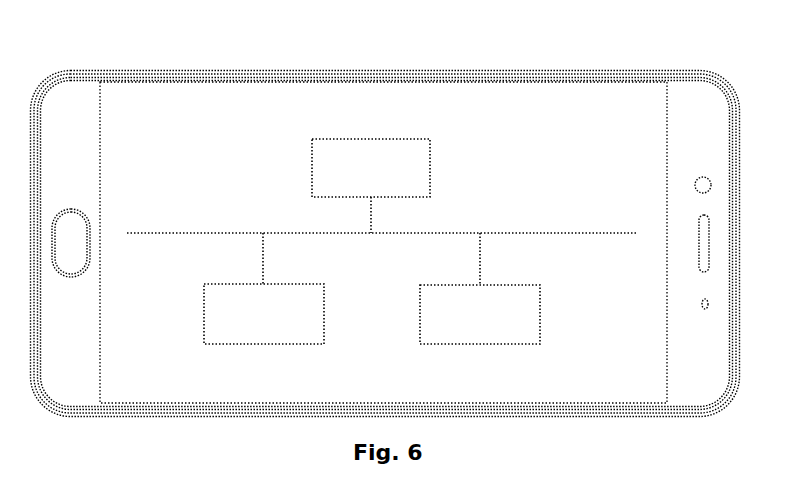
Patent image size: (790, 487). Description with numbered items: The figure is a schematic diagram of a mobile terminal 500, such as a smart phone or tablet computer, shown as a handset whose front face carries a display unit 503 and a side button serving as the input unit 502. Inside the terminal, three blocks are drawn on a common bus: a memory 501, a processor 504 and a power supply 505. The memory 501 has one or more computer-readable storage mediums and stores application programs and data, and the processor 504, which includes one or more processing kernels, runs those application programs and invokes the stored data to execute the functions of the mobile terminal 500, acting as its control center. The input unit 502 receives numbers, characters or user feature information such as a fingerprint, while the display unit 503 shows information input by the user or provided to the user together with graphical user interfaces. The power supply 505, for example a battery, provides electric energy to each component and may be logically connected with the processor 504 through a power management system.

The mobile terminal 500 is at (335, 50).
The memory 501 is at (388, 139).
The input unit 502 is at (68, 233).
The display unit 503 is at (570, 100).
The processor 504 is at (300, 284).
The power supply 505 is at (522, 285).